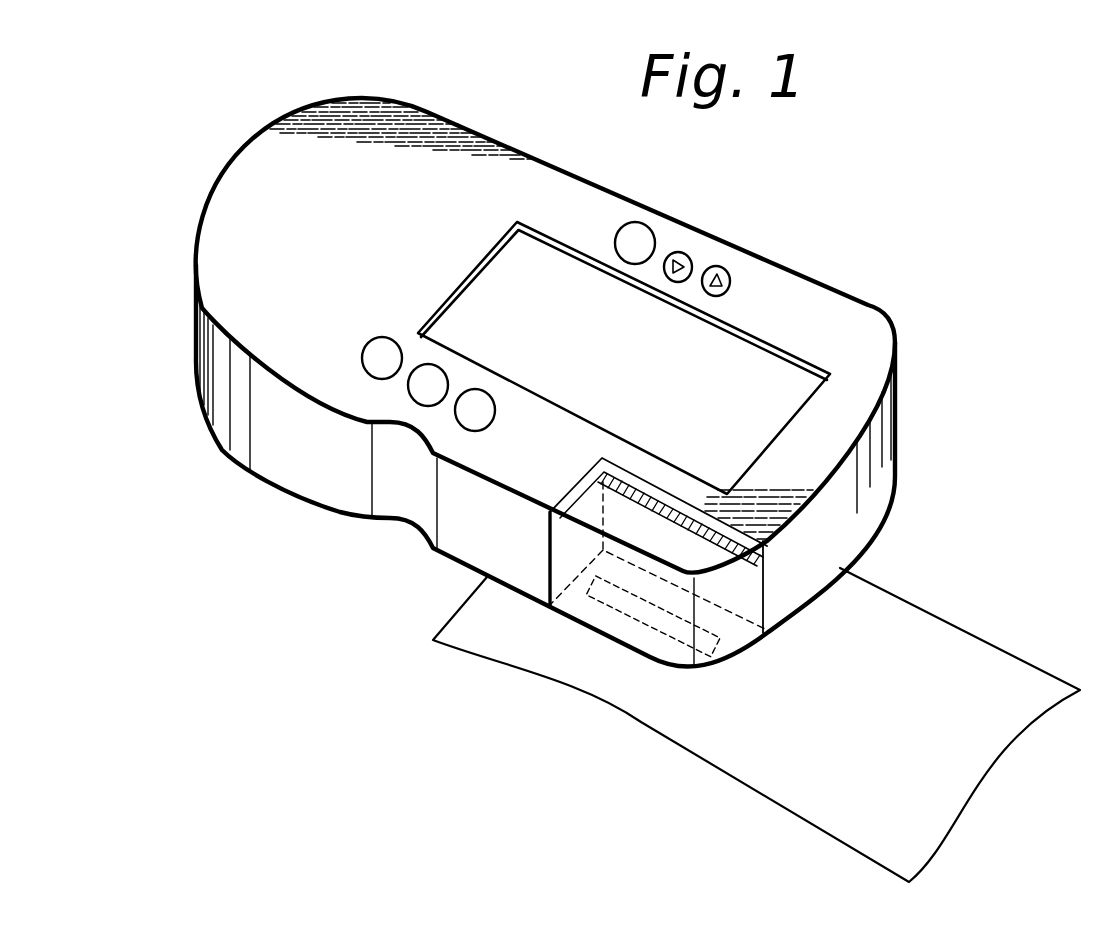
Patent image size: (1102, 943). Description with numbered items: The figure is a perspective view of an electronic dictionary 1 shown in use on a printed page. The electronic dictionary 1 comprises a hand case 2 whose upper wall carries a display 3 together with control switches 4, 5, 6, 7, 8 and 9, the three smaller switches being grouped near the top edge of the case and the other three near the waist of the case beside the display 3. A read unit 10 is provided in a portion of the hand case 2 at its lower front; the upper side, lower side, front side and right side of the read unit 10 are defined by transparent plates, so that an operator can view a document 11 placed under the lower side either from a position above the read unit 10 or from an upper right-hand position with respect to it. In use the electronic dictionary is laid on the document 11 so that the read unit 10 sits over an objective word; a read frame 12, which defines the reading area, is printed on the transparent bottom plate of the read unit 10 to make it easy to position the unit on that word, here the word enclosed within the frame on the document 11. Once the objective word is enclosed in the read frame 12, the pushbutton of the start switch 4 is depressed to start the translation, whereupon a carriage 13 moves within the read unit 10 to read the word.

The electronic dictionary 1 is at (567, 166).
The hand case 2 is at (224, 238).
The display 3 is at (763, 357).
The start switch 4 is at (650, 223).
The control switch 5 is at (690, 253).
The control switch 6 is at (724, 268).
The control switch 7 is at (365, 371).
The control switch 8 is at (414, 401).
The control switch 9 is at (458, 426).
The read unit 10 is at (560, 557).
The document 11 is at (921, 624).
The read frame 12 is at (620, 616).
The carriage 13 is at (565, 490).